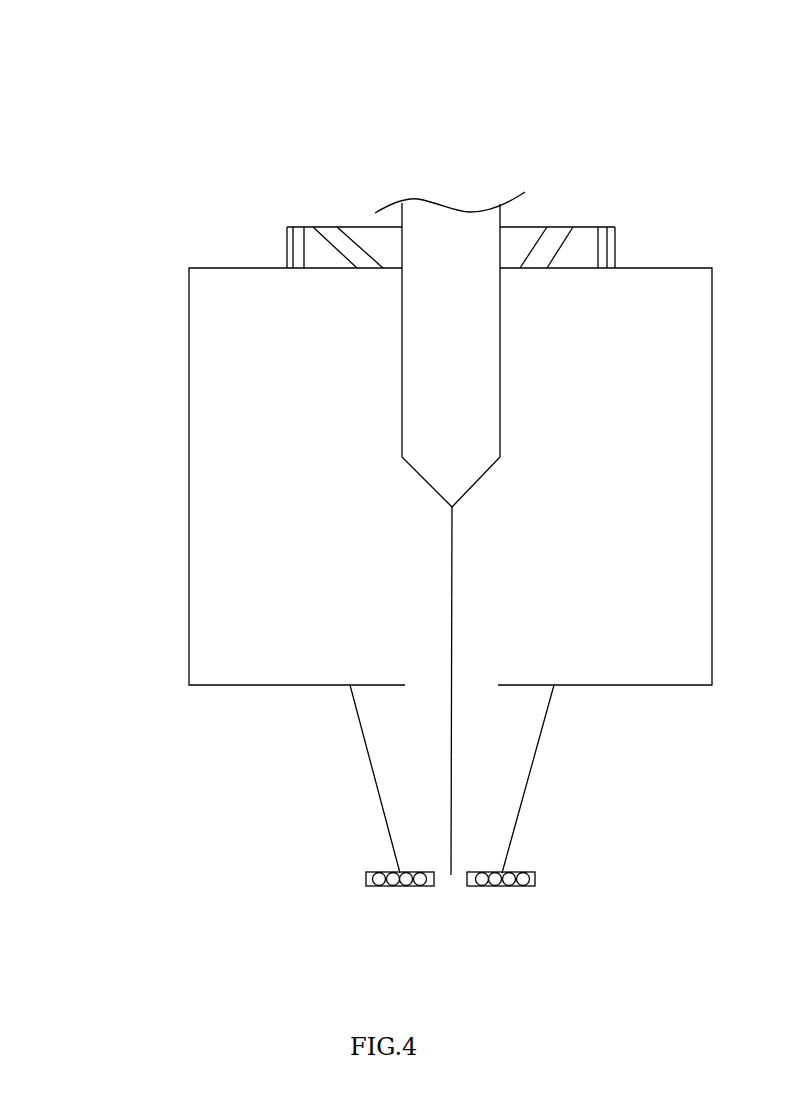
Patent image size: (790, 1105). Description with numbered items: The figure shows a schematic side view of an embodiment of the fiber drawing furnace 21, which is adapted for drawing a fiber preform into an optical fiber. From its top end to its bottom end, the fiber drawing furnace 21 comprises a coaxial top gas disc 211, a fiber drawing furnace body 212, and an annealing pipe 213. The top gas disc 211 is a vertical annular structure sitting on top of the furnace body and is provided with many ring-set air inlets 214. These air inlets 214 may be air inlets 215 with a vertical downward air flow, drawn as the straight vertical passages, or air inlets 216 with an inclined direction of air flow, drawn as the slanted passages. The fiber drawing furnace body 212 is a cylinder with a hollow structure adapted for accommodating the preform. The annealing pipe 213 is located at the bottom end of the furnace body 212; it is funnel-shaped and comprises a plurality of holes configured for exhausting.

The fiber drawing furnace 21 is at (378, 156).
The top gas disc 211 is at (350, 225).
The fiber drawing furnace body 212 is at (188, 437).
The annealing pipe 213 is at (387, 822).
The air inlets 214 is at (645, 173).
The air inlets with vertical downward air flow 215 is at (612, 228).
The air inlets with inclined direction of air flow 216 is at (552, 237).